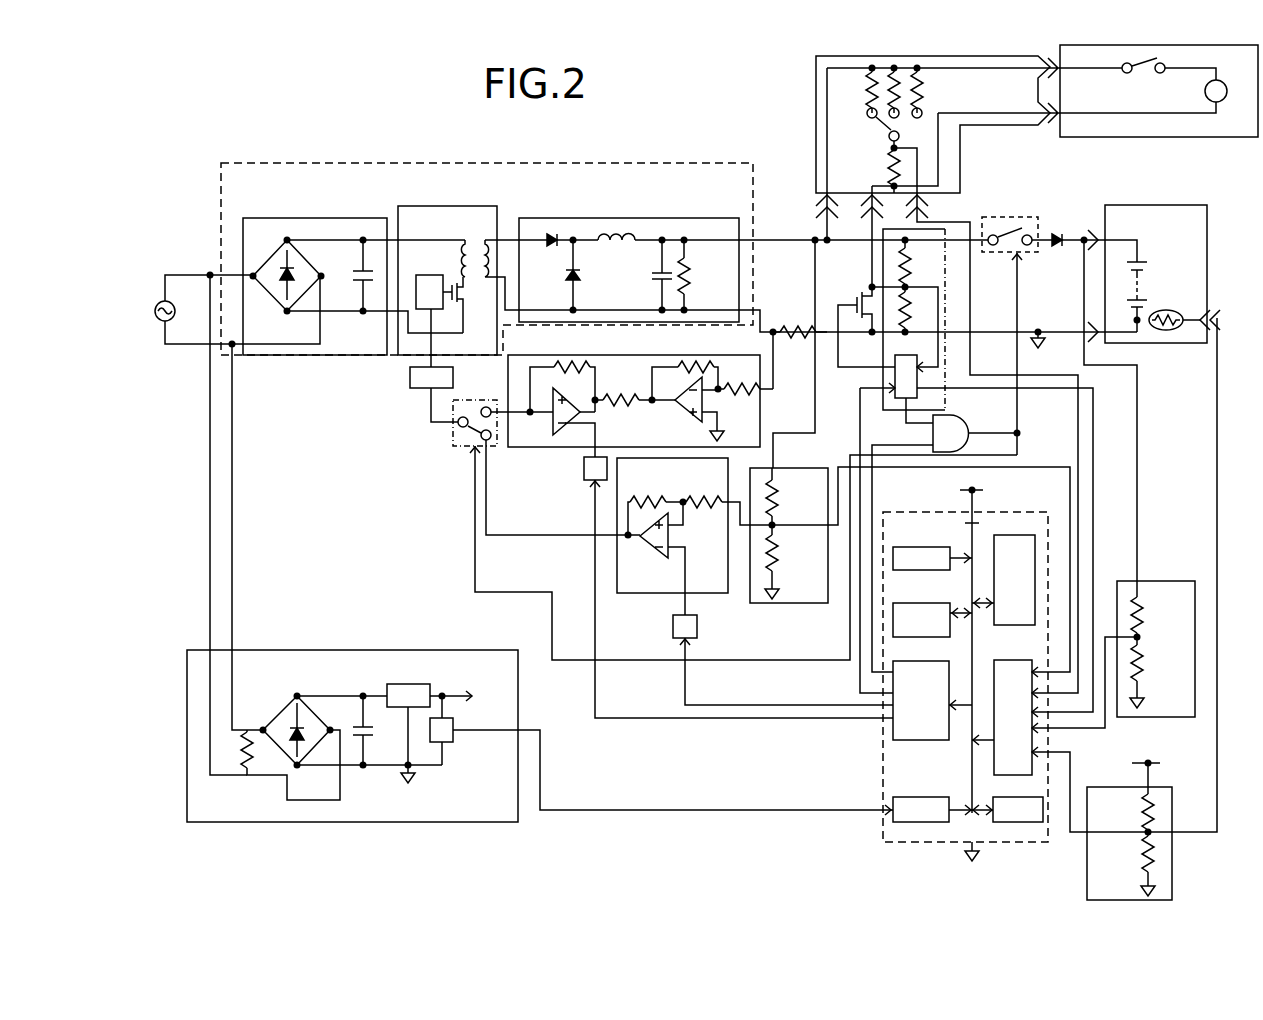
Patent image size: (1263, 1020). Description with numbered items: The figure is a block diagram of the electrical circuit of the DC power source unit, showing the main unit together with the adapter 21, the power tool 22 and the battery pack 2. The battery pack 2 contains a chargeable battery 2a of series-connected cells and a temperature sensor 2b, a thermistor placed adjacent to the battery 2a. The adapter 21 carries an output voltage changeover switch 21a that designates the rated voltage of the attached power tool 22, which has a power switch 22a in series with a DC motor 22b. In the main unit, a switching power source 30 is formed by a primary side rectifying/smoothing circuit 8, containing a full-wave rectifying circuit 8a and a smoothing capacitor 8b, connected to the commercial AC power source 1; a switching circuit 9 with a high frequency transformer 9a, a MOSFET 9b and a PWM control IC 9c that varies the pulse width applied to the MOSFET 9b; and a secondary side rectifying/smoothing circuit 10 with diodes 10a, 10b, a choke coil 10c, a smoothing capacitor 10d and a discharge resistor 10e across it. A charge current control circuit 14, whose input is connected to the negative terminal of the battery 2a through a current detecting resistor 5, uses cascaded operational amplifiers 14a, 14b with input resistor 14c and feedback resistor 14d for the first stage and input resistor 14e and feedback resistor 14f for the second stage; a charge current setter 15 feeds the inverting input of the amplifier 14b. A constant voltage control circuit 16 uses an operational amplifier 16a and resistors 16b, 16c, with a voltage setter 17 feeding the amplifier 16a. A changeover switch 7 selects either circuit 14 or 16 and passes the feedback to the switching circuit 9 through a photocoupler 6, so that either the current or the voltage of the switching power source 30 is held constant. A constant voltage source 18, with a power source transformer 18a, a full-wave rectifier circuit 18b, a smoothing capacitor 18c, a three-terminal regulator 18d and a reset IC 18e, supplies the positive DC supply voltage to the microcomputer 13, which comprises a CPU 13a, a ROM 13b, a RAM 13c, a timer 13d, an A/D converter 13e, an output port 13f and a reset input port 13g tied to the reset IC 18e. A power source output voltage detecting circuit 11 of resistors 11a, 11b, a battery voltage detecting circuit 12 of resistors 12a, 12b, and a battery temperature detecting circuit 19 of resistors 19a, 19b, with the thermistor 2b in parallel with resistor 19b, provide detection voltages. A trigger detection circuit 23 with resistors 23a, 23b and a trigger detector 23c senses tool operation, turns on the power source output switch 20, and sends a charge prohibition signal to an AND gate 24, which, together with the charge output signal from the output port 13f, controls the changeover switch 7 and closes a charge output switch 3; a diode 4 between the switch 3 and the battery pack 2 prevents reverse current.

The commercial AC power source 1 is at (178, 307).
The battery pack 2 is at (1154, 255).
The battery 2a is at (1146, 262).
The temperature sensor 2b is at (1168, 308).
The charge output switch 3 is at (1000, 225).
The diode 4 is at (1053, 228).
The current detecting resistor 5 is at (791, 326).
The photocoupler 6 is at (410, 380).
The changeover switch 7 is at (453, 432).
The primary side rectifying/smoothing circuit 8 is at (354, 268).
The full-wave rectifying circuit 8a is at (270, 262).
The smoothing capacitor 8b is at (354, 282).
The switching circuit 9 is at (458, 268).
The high frequency transformer 9a is at (470, 244).
The MOSFET 9b is at (466, 298).
The PWM control IC 9c is at (437, 276).
The secondary side rectifying/smoothing circuit 10 is at (736, 256).
The diode 10a is at (553, 248).
The diode 10b is at (566, 276).
The choke coil 10c is at (618, 249).
The smoothing capacitor 10d is at (652, 278).
The discharge resistor 10e is at (689, 283).
The power source output voltage detecting circuit 11 is at (910, 572).
The resistor 11a is at (781, 498).
The resistor 11b is at (781, 550).
The battery voltage detecting circuit 12 is at (1113, 643).
The resistor 12a is at (1145, 598).
The resistor 12b is at (1145, 653).
The microcomputer 13 is at (965, 670).
The central processing unit 13a is at (1000, 545).
The read-only memory 13b is at (930, 547).
The random access memory 13c is at (930, 603).
The timer 13d is at (1001, 797).
The analog-to-digital converter 13e is at (1013, 659).
The output port 13f is at (915, 668).
The reset input port 13g is at (926, 797).
The charge current control circuit 14 is at (621, 394).
The first-stage operational amplifier 14a is at (677, 406).
The second-stage operational amplifier 14b is at (556, 420).
The input resistor 14c is at (741, 395).
The feedback resistor 14d is at (697, 362).
The input resistor 14e is at (640, 386).
The feedback resistor 14f is at (558, 372).
The charge current setter 15 is at (584, 470).
The constant voltage control circuit 16 is at (691, 544).
The operational amplifier 16a is at (648, 546).
The resistor 16b is at (655, 496).
The resistor 16c is at (704, 496).
The voltage setter 17 is at (698, 628).
The constant voltage source 18 is at (540, 548).
The power source transformer 18a is at (247, 728).
The full-wave rectifier circuit 18b is at (288, 702).
The smoothing capacitor 18c is at (361, 725).
The three-terminal regulator 18d is at (412, 683).
The reset IC 18e is at (455, 737).
The battery temperature detecting circuit 19 is at (1152, 831).
The resistor 19a is at (1142, 800).
The resistor 19b is at (1142, 848).
The power source output switch 20 is at (862, 292).
The adapter 21 is at (925, 377).
The output voltage changeover switch 21a is at (878, 130).
The power tool 22 is at (1159, 110).
The power switch 22a is at (1140, 78).
The DC motor 22b is at (1228, 85).
The trigger detection circuit 23 is at (958, 473).
The resistor 23a is at (915, 260).
The resistor 23b is at (915, 310).
The trigger detector 23c is at (894, 376).
The AND gate 24 is at (970, 418).
The switching power source 30 is at (652, 160).